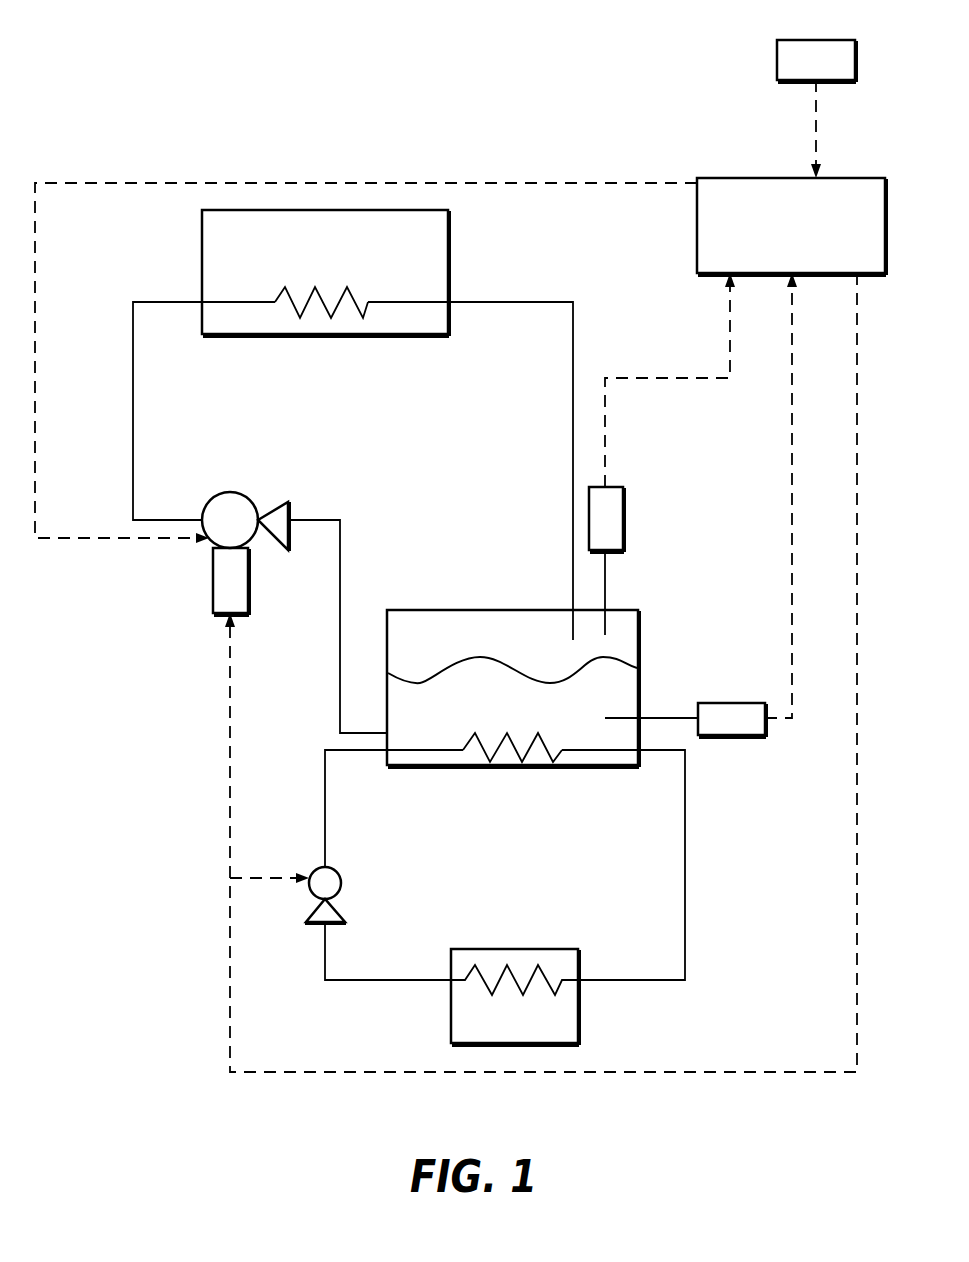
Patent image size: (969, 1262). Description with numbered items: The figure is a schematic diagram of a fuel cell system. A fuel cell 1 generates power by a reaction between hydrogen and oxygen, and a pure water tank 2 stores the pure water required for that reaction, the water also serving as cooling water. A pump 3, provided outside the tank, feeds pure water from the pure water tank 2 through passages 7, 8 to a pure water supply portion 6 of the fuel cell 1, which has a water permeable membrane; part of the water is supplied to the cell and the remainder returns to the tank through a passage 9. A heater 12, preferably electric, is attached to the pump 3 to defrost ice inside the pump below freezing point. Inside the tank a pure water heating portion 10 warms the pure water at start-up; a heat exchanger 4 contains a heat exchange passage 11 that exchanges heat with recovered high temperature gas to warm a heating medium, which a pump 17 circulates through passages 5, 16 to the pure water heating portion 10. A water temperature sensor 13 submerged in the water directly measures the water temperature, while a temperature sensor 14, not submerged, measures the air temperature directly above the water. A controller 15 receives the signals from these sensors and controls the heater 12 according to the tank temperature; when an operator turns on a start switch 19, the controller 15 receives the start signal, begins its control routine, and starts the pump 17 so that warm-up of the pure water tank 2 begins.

The fuel cell 1 is at (433, 233).
The pure water tank 2 is at (507, 612).
The pump 3 is at (227, 493).
The heat exchanger 4 is at (451, 1023).
The passage 5 is at (338, 770).
The pure water supply portion 6 is at (293, 303).
The passage 7 is at (340, 610).
The passage 8 is at (133, 425).
The passage 9 is at (573, 378).
The pure water heating portion 10 is at (498, 752).
The heat exchange passage 11 is at (514, 968).
The heater 12 is at (213, 584).
The water temperature sensor 13 is at (743, 735).
The temperature sensor 14 is at (623, 518).
The controller 15 is at (732, 182).
The passage 16 is at (685, 887).
The pump 17 is at (342, 882).
The start switch 19 is at (790, 50).